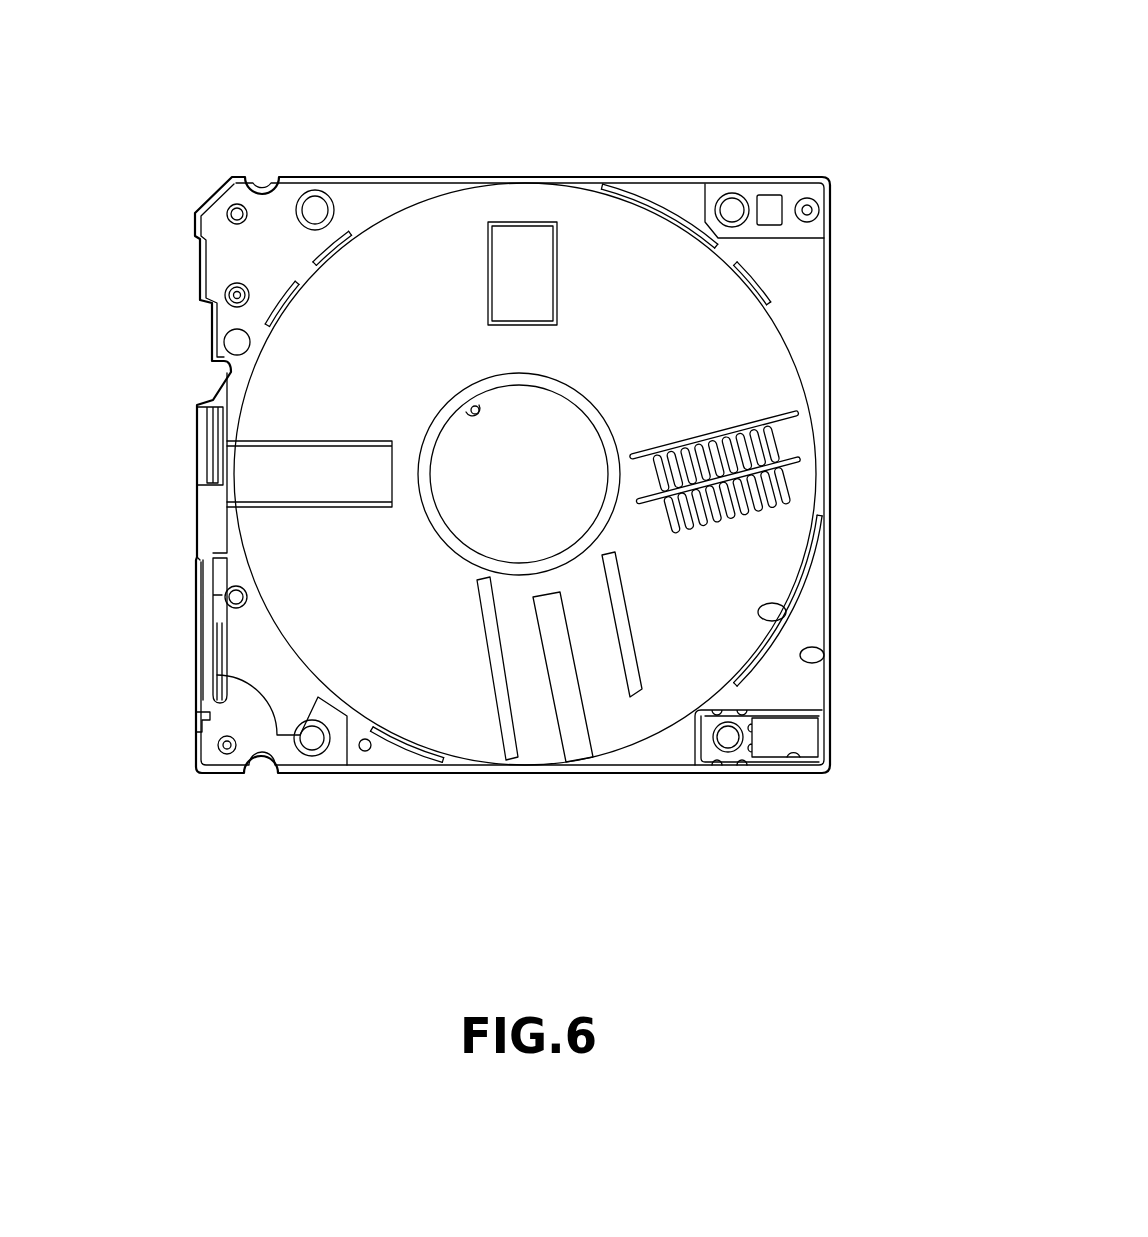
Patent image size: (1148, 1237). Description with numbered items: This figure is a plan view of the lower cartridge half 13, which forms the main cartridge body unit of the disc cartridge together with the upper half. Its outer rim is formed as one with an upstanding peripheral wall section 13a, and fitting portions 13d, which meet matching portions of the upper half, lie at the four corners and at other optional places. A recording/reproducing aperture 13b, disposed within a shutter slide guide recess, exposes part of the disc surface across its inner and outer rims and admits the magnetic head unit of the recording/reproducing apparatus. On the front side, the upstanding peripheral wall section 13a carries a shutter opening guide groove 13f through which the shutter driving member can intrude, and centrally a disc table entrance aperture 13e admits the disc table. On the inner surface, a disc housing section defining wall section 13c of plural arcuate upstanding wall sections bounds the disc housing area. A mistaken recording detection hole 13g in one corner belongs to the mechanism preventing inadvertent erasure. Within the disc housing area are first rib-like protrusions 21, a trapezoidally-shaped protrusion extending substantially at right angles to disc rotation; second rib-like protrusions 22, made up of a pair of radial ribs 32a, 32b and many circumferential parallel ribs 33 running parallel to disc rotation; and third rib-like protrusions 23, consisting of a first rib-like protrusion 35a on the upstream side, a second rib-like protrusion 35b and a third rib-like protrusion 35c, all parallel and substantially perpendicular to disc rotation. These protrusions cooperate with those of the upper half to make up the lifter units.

The lower cartridge half 13 is at (827, 121).
The upstanding peripheral wall section 13a is at (800, 656).
The recording/reproducing aperture 13b is at (272, 505).
The disc housing section defining wall section 13c is at (772, 613).
The fitting portions 13d is at (237, 212).
The disc table entrance aperture 13e is at (479, 411).
The shutter opening guide groove 13f is at (196, 588).
The mistaken recording detection hole 13g is at (789, 754).
The first rib-like protrusions 21 is at (548, 257).
The second rib-like protrusions 22 is at (788, 420).
The third rib-like protrusions 23 is at (594, 755).
The upper rail 32a is at (735, 420).
The lower rail 32b is at (768, 447).
The fins 33 is at (774, 468).
The first rib-like protrusion 35a is at (660, 725).
The second rib-like protrusion 35b is at (580, 748).
The third rib-like protrusion 35c is at (512, 758).